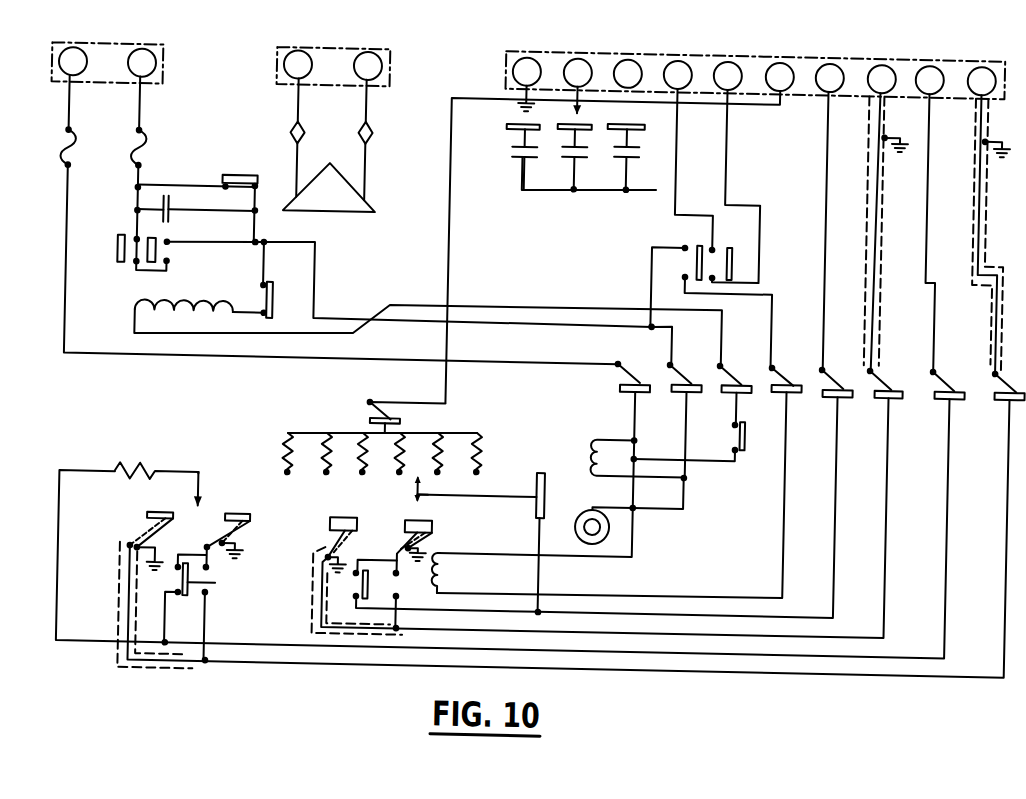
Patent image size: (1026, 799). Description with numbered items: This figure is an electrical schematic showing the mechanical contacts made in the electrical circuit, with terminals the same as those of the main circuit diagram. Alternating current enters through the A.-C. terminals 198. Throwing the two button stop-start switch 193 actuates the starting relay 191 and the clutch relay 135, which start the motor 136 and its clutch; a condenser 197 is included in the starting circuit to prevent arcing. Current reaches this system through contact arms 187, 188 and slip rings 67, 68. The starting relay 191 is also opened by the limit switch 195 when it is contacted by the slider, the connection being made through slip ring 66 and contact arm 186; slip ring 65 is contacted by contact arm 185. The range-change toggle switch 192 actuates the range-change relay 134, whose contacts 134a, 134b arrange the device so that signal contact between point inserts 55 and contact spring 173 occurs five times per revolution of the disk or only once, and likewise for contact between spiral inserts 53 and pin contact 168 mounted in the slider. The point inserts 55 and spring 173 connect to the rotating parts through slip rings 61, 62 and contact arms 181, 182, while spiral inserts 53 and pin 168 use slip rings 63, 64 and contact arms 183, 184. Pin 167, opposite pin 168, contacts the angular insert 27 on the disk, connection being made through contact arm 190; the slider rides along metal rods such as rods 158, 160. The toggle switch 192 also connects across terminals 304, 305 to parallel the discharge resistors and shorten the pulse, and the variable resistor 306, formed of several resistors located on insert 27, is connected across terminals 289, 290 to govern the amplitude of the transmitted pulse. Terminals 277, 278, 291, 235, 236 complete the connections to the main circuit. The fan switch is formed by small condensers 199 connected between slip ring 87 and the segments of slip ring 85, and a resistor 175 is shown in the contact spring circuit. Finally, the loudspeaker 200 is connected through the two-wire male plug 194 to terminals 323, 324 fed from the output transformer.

The A.-C. terminals 198 is at (126, 56).
The terminal 323 is at (304, 58).
The terminal 324 is at (379, 56).
The two-wire male plug 194 is at (359, 137).
The loudspeaker 200 is at (353, 220).
The two button stop-start switch 193 is at (254, 179).
The condenser 197 is at (174, 223).
The starting relay 191 is at (144, 307).
The slip ring 85 is at (638, 128).
The condensers 199 is at (612, 150).
The slip ring 87 is at (611, 189).
The terminal 277 is at (589, 47).
The terminal 278 is at (641, 46).
The terminal 304 is at (689, 45).
The terminal 305 is at (739, 44).
The terminal 289 is at (790, 45).
The terminal 290 is at (842, 44).
The terminal 291 is at (892, 43).
The terminal 235 is at (942, 43).
The terminal 236 is at (993, 42).
The range-change toggle switch 192 is at (693, 262).
The contact arm 188 is at (626, 371).
The contact arm 187 is at (679, 370).
The contact arm 186 is at (729, 369).
The contact arm 185 is at (780, 368).
The contact arm 184 is at (830, 367).
The contact arm 183 is at (878, 366).
The contact arm 182 is at (940, 365).
The contact arm 181 is at (1003, 364).
The slip ring 68 is at (632, 394).
The slip ring 67 is at (687, 393).
The slip ring 66 is at (737, 392).
The slip ring 65 is at (789, 391).
The slip ring 64 is at (840, 393).
The slip ring 63 is at (889, 395).
The slip ring 62 is at (950, 394).
The slip ring 61 is at (1010, 395).
The contact arm 190 is at (368, 402).
The angular insert 27 is at (399, 425).
The variable resistor 306 is at (286, 447).
The pin 167 is at (401, 488).
The pin contact 168 is at (405, 505).
The metal rod 158 is at (560, 496).
The metal rod 160 is at (589, 512).
The motor 136 is at (577, 524).
The clutch relay 135 is at (592, 444).
The limit switch 195 is at (750, 436).
The range-change relay 134 is at (444, 577).
The range-change relay contacts 134a is at (384, 594).
The range-change relay contacts 134b is at (213, 603).
The resistor 175 is at (160, 470).
The contact spring 173 is at (204, 513).
The point inserts 55 is at (154, 520).
The spiral inserts 53 is at (349, 516).